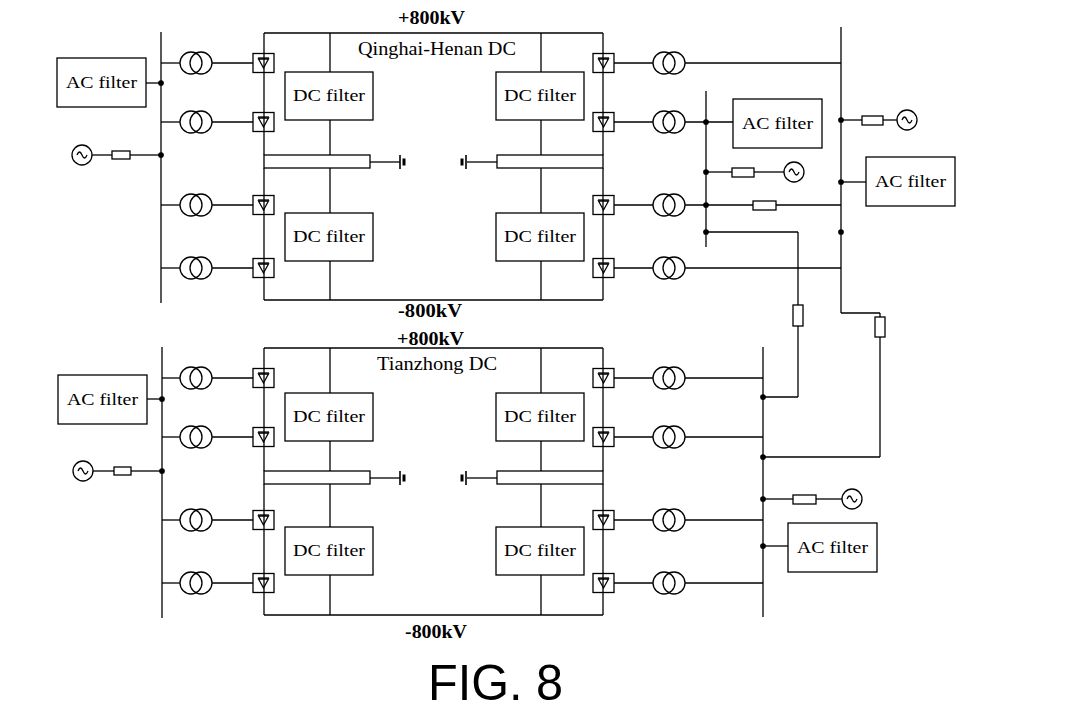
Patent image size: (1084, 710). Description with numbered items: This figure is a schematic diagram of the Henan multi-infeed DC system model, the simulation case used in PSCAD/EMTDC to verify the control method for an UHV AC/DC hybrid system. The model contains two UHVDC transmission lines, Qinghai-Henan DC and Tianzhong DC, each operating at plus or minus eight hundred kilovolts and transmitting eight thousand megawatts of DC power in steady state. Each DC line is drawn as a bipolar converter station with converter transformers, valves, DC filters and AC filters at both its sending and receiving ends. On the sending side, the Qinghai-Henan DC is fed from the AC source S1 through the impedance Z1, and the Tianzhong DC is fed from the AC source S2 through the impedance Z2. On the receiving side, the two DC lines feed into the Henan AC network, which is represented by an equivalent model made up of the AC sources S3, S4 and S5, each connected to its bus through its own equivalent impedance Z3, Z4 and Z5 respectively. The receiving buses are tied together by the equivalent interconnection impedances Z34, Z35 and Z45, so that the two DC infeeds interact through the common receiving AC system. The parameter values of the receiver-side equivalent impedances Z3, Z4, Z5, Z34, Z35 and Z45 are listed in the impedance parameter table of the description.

The equivalent impedance of AC system S1 Z1 is at (126, 147).
The equivalent impedance of AC system S2 Z2 is at (127, 463).
The impedance Z3 is at (745, 165).
The impedance Z4 is at (869, 113).
The impedance Z5 is at (802, 492).
The impedance Z34 is at (764, 197).
The impedance Z35 is at (768, 314).
The impedance Z45 is at (837, 385).
The AC system source 1 (Qinghai-Henan sending end) S1 is at (72, 155).
The AC system source 2 (Tianzhong sending end) S2 is at (73, 471).
The AC system source 3 (receiving end) S3 is at (803, 172).
The AC system source 4 (receiving end) S4 is at (915, 120).
The AC system source 5 (receiving end) S5 is at (861, 499).